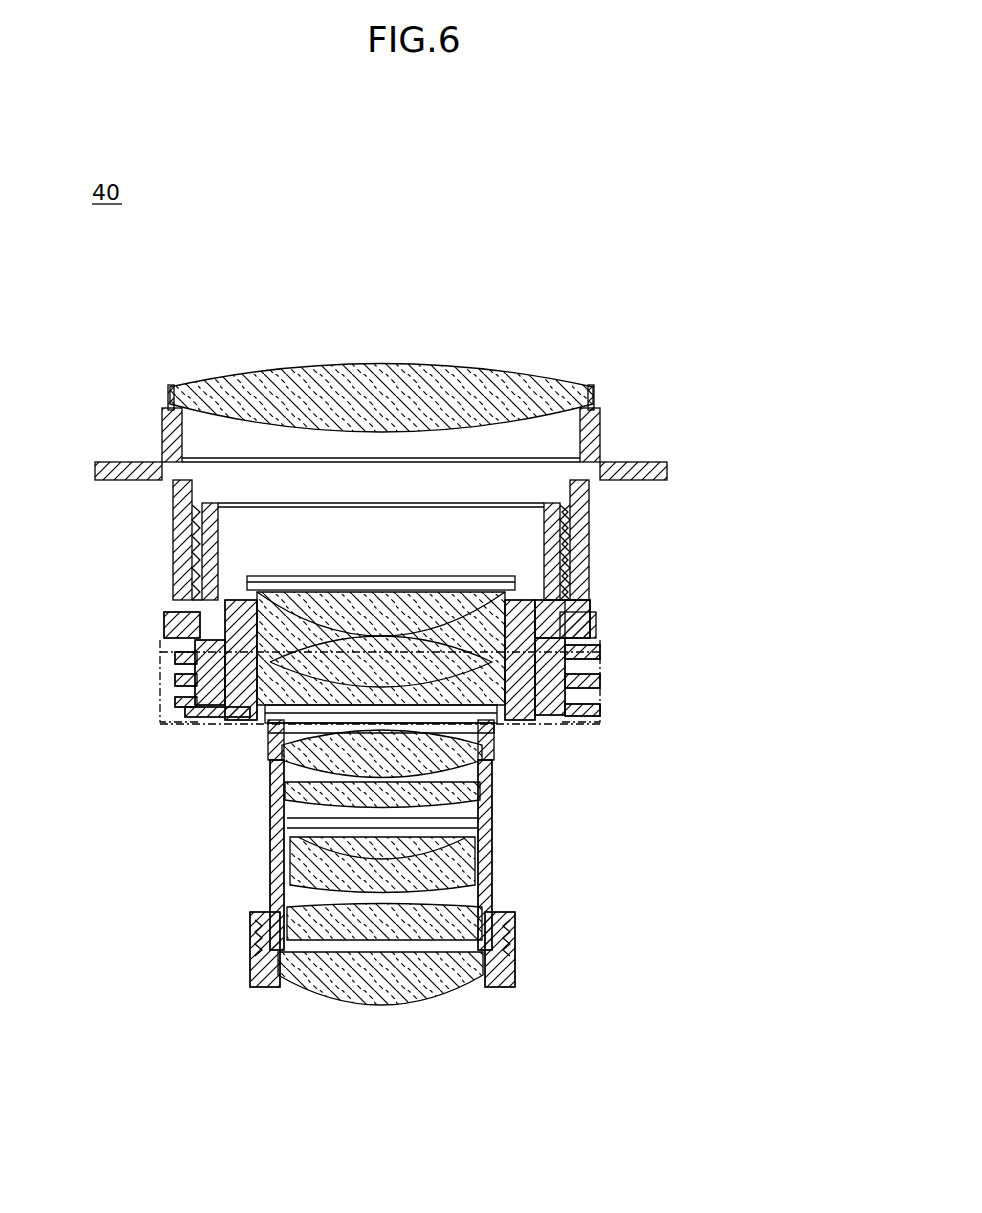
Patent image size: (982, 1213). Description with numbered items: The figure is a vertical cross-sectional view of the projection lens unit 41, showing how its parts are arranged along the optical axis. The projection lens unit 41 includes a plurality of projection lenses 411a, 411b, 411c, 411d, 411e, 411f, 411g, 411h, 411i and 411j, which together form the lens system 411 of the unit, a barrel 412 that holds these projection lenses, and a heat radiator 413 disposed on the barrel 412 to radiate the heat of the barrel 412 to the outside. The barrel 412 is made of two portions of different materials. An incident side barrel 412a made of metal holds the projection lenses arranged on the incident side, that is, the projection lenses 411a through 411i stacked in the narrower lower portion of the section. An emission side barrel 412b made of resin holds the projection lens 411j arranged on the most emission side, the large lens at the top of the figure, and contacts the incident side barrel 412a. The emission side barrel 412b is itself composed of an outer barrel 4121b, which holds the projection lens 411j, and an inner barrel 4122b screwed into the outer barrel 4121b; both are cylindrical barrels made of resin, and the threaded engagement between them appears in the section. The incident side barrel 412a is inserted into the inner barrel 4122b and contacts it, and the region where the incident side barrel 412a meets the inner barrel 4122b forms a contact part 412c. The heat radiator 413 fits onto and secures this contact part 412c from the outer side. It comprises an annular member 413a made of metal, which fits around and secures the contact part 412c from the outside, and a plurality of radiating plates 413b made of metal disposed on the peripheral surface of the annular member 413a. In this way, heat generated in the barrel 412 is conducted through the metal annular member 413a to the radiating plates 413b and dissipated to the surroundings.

The projection lens unit 41 is at (533, 362).
The lens barrel 411 is at (380, 775).
The projection lens 411a is at (372, 988).
The projection lens 411b is at (505, 928).
The projection lens 411c is at (470, 848).
The projection lens 411d is at (280, 840).
The projection lens 411e is at (275, 798).
The projection lens 411f is at (470, 740).
The projection lens 411g is at (455, 700).
The projection lens 411h is at (165, 612).
The projection lens 411i is at (196, 576).
The projection lens 411j is at (268, 378).
The barrel 412 is at (802, 578).
The incident side barrel 412a is at (600, 675).
The emission side barrel 412b is at (716, 538).
The outer barrel 4121b is at (590, 548).
The inner barrel 4122b is at (598, 602).
The contact part 412c is at (600, 718).
The heat radiator 413 is at (80, 633).
The annular member 413a is at (215, 724).
The radiating plates 413b is at (180, 704).